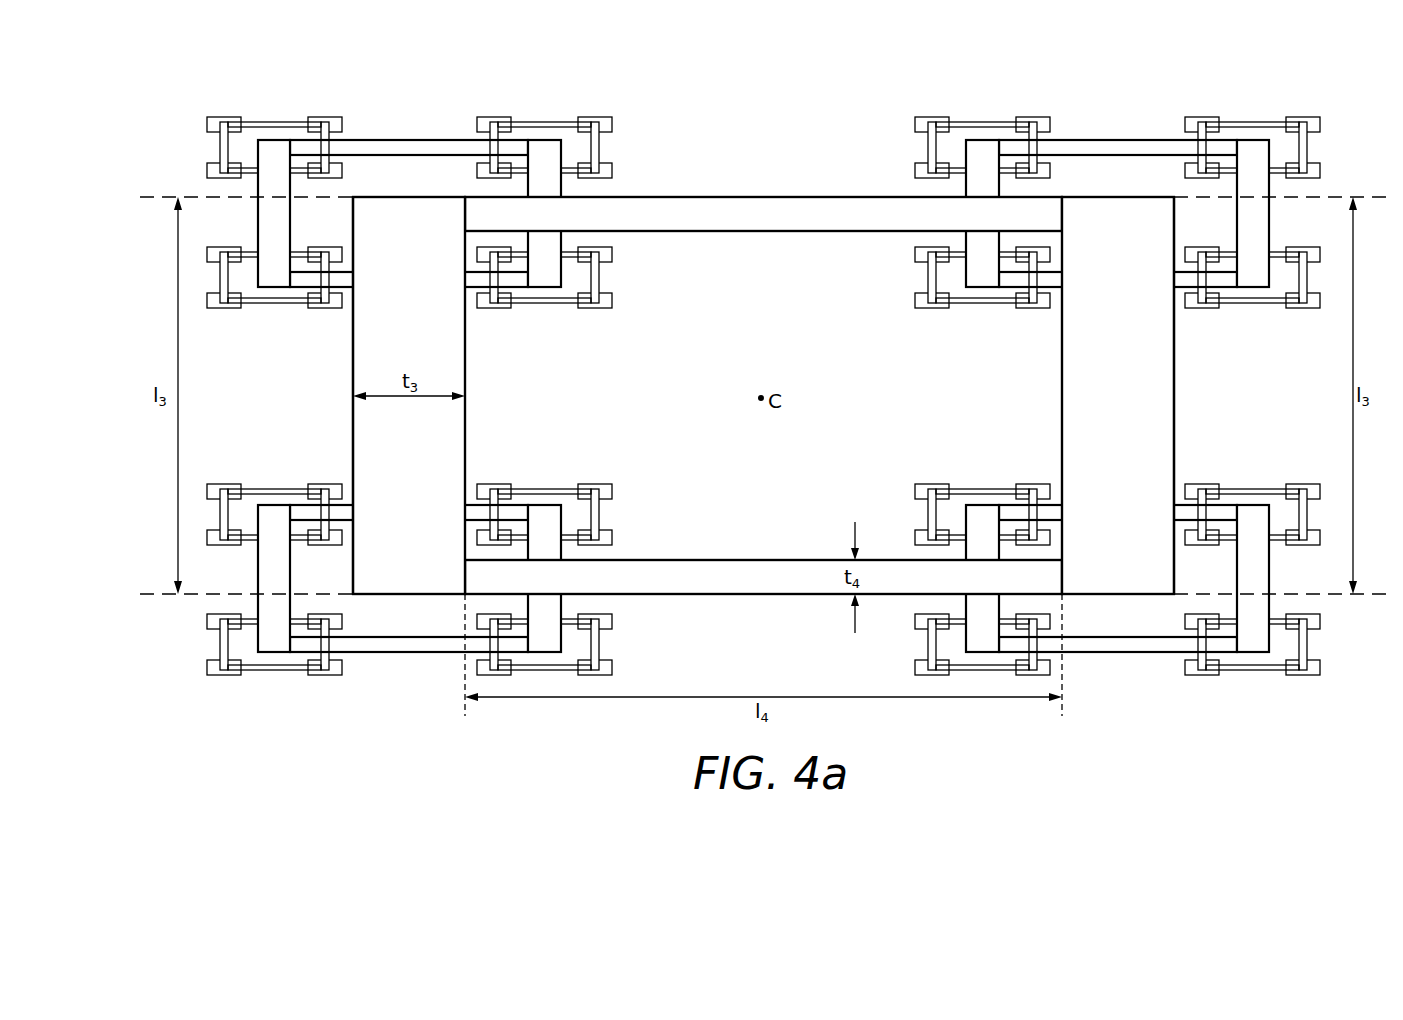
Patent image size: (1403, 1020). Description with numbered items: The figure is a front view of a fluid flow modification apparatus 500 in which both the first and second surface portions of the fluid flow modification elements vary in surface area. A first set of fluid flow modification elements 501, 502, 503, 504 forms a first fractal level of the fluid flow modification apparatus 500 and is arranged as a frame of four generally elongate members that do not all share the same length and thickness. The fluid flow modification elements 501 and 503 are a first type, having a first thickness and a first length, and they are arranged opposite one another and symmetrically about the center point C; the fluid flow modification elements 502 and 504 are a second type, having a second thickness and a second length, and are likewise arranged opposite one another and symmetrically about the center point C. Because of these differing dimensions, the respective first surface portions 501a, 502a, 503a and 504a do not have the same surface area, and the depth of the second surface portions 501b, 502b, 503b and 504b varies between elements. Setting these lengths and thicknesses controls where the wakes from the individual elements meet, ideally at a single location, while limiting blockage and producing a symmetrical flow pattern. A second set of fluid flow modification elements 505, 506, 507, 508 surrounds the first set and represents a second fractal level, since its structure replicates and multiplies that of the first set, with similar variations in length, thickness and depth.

The fluid flow modification apparatus 500 is at (197, 104).
The fluid flow modification element 501 is at (465, 352).
The first surface portion 501a is at (435, 468).
The second surface portion 501b is at (353, 420).
The fluid flow modification element 502 is at (708, 205).
The first surface portion 502a is at (790, 223).
The second surface portion 502b is at (770, 231).
The fluid flow modification element 503 is at (1062, 352).
The first surface portion 503a is at (1146, 468).
The second surface portion 503b is at (1174, 420).
The fluid flow modification element 504 is at (708, 586).
The first surface portion 504a is at (789, 586).
The second surface portion 504b is at (758, 560).
The fluid flow modification element 505 is at (264, 577).
The fluid flow modification element 506 is at (307, 512).
The fluid flow modification element 507 is at (562, 548).
The fluid flow modification element 508 is at (433, 641).